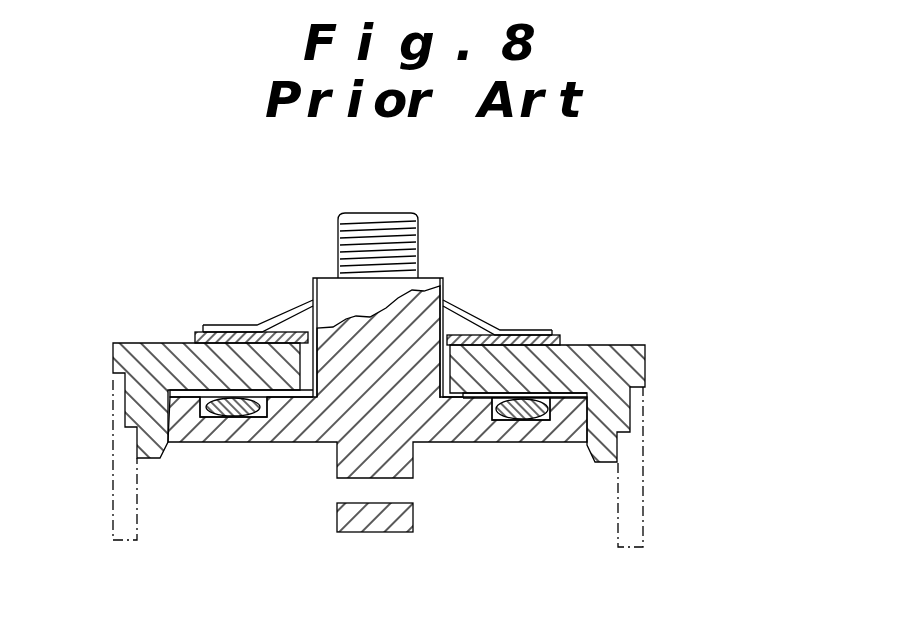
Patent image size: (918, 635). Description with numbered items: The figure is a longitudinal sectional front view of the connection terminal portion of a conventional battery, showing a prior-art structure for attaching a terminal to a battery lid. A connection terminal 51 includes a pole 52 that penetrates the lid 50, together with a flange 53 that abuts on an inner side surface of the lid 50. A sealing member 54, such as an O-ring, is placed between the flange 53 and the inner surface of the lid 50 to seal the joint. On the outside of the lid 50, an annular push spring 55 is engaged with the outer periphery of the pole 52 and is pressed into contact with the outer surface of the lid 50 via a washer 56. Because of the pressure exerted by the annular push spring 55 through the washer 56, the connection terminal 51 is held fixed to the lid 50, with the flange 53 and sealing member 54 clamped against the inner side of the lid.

The lid 50 is at (168, 362).
The connection terminal 51 is at (311, 278).
The pole 52 is at (440, 283).
The flange 53 is at (287, 422).
The sealing member 54 is at (518, 420).
The annular push spring 55 is at (507, 325).
The washer 56 is at (560, 337).